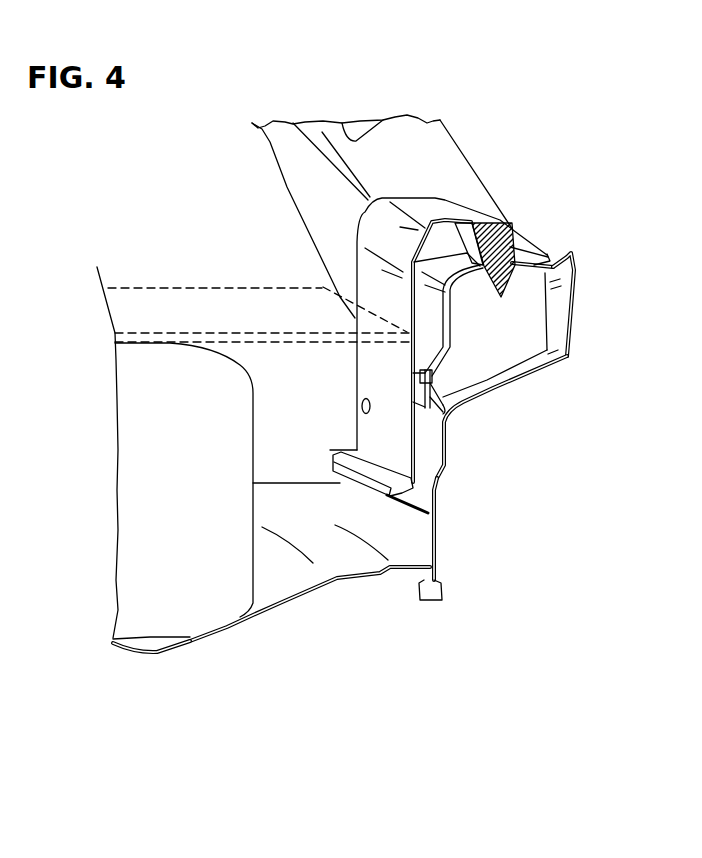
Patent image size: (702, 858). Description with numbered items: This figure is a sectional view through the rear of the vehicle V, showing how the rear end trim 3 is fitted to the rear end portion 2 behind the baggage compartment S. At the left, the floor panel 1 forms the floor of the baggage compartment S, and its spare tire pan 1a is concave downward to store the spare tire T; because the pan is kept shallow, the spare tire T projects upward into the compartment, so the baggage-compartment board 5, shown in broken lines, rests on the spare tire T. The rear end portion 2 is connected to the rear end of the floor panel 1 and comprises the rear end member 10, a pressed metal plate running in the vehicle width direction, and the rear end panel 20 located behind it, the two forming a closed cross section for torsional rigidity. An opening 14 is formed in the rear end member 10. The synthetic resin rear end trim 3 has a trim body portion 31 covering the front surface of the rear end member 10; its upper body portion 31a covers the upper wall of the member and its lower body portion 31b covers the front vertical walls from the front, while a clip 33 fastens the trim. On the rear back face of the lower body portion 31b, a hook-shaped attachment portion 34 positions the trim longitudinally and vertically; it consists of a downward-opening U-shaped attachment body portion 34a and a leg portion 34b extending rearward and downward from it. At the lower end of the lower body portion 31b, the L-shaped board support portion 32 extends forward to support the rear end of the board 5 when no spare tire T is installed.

The floor panel 1 is at (364, 580).
The spare tire pan 1a is at (157, 653).
The rear end portion 2 is at (582, 272).
The rear end trim 3 is at (460, 190).
The baggage-compartment board 5 is at (220, 287).
The rear end member 10 is at (532, 258).
The opening 14 is at (437, 347).
The rear end panel 20 is at (522, 390).
The trim body portion 31 is at (368, 237).
The upper body portion 31a is at (415, 200).
The lower body portion 31b is at (367, 359).
The board support portion 32 is at (400, 484).
The clip 33 is at (527, 261).
The attachment portion 34 is at (443, 378).
The attachment body portion 34a is at (437, 378).
The leg portion 34b is at (453, 405).
The baggage compartment S is at (171, 178).
The spare tire T is at (128, 580).
The vehicle V is at (536, 91).